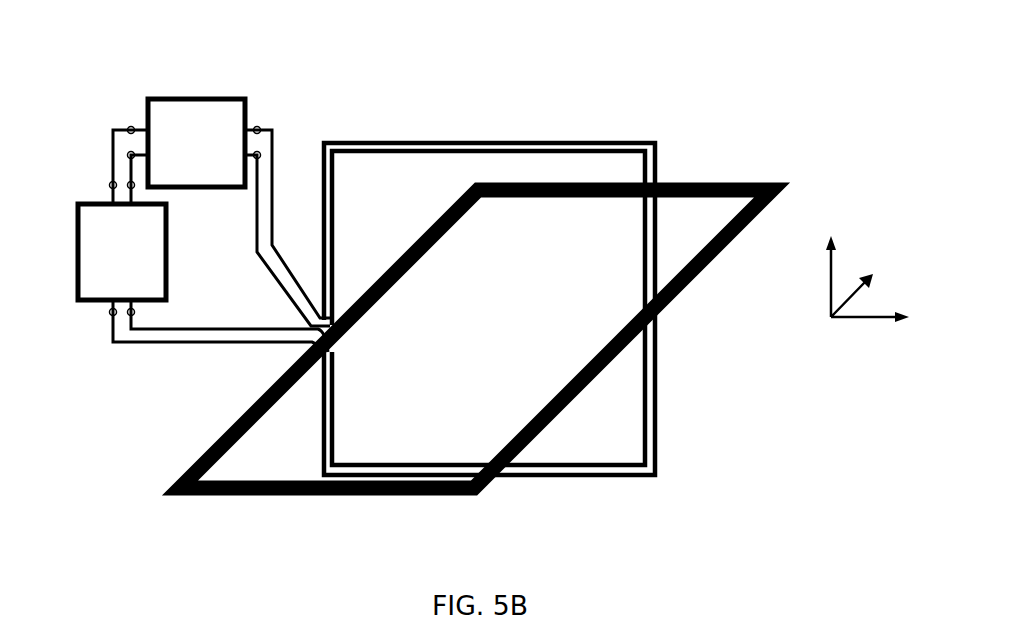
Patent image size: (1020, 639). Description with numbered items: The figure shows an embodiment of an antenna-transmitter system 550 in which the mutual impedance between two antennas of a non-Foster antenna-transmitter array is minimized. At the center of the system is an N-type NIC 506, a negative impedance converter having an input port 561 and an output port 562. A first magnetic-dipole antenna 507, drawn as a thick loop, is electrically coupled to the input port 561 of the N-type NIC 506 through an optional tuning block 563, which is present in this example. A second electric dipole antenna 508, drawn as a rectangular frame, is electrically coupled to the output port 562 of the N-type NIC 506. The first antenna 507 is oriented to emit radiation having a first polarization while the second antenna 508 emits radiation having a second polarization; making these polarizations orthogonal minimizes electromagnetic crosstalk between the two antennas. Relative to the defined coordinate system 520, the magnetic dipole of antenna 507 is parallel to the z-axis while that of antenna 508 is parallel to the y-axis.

The antenna-transmitter system 550 is at (611, 74).
The first magnetic-dipole antenna 507 is at (702, 178).
The second electric dipole antenna 508 is at (480, 141).
The N-type NIC 506 is at (193, 96).
The input port 561 is at (128, 126).
The output port 562 is at (260, 127).
The tuning block 563 is at (157, 260).
The defined coordinate system 520 is at (840, 322).